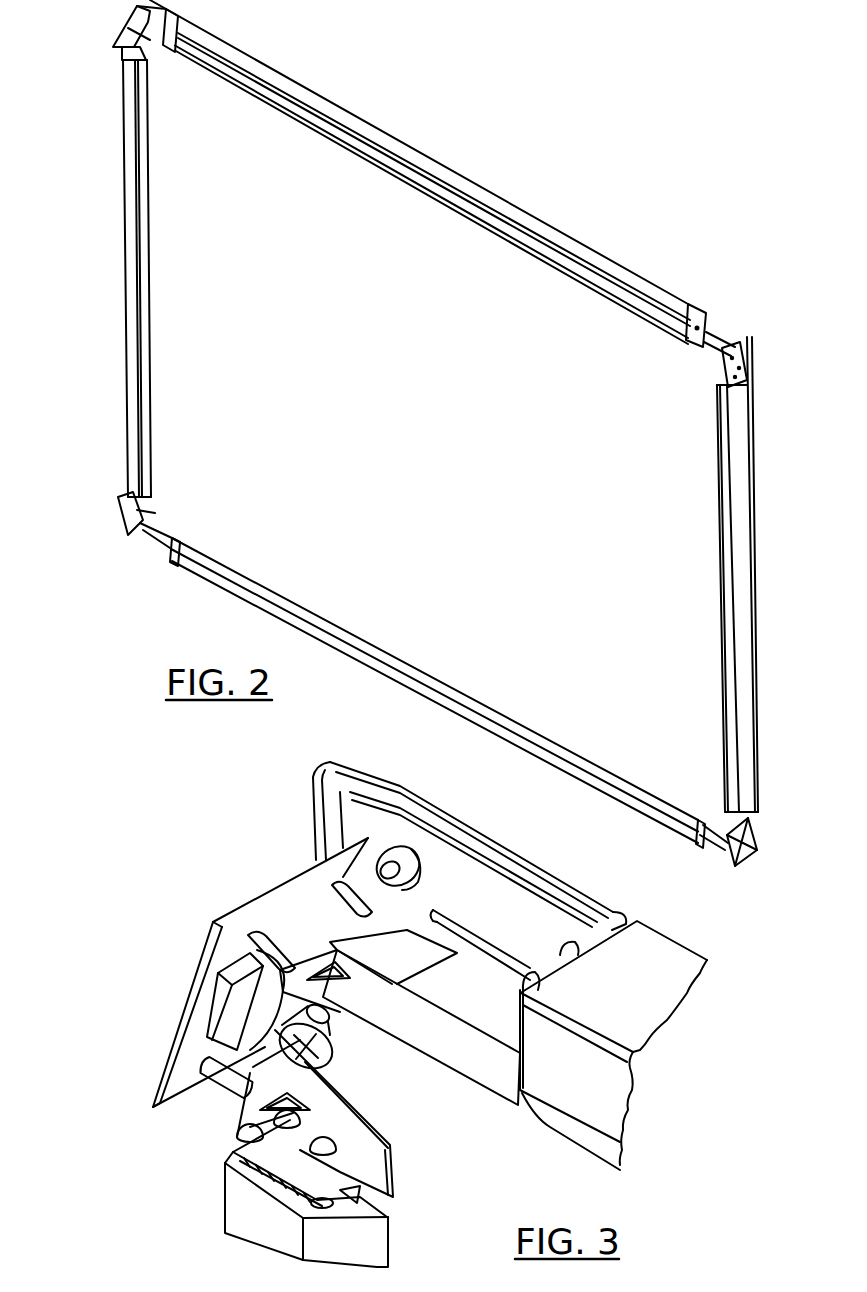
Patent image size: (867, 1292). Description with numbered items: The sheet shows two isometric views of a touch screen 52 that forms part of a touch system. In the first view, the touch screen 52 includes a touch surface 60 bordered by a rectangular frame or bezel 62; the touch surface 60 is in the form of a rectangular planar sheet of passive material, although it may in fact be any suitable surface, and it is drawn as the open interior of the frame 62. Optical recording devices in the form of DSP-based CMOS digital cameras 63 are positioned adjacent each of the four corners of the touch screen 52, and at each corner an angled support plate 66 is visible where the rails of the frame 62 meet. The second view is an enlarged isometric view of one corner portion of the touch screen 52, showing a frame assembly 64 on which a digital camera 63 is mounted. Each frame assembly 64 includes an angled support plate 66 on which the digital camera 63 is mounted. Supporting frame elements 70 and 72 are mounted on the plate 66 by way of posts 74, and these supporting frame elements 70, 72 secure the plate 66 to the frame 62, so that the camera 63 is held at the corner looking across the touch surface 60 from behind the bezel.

In FIG. 2, the touch screen 52 is at (665, 224).
In FIG. 2, the touch surface 60 is at (391, 429).
In FIG. 2, the frame 62 is at (522, 216).
In FIG. 3, the frame 62 is at (573, 1128).
In FIG. 2, the digital camera 63 is at (158, 72).
In FIG. 3, the digital camera 63 is at (345, 1066).
In FIG. 3, the frame assembly 64 is at (152, 922).
In FIG. 2, the angled support plate 66 is at (742, 367).
In FIG. 3, the angled support plate 66 is at (187, 1042).
In FIG. 3, the supporting frame element 70 is at (480, 1066).
In FIG. 3, the supporting frame element 72 is at (376, 1161).
In FIG. 3, the post 74 is at (338, 894).